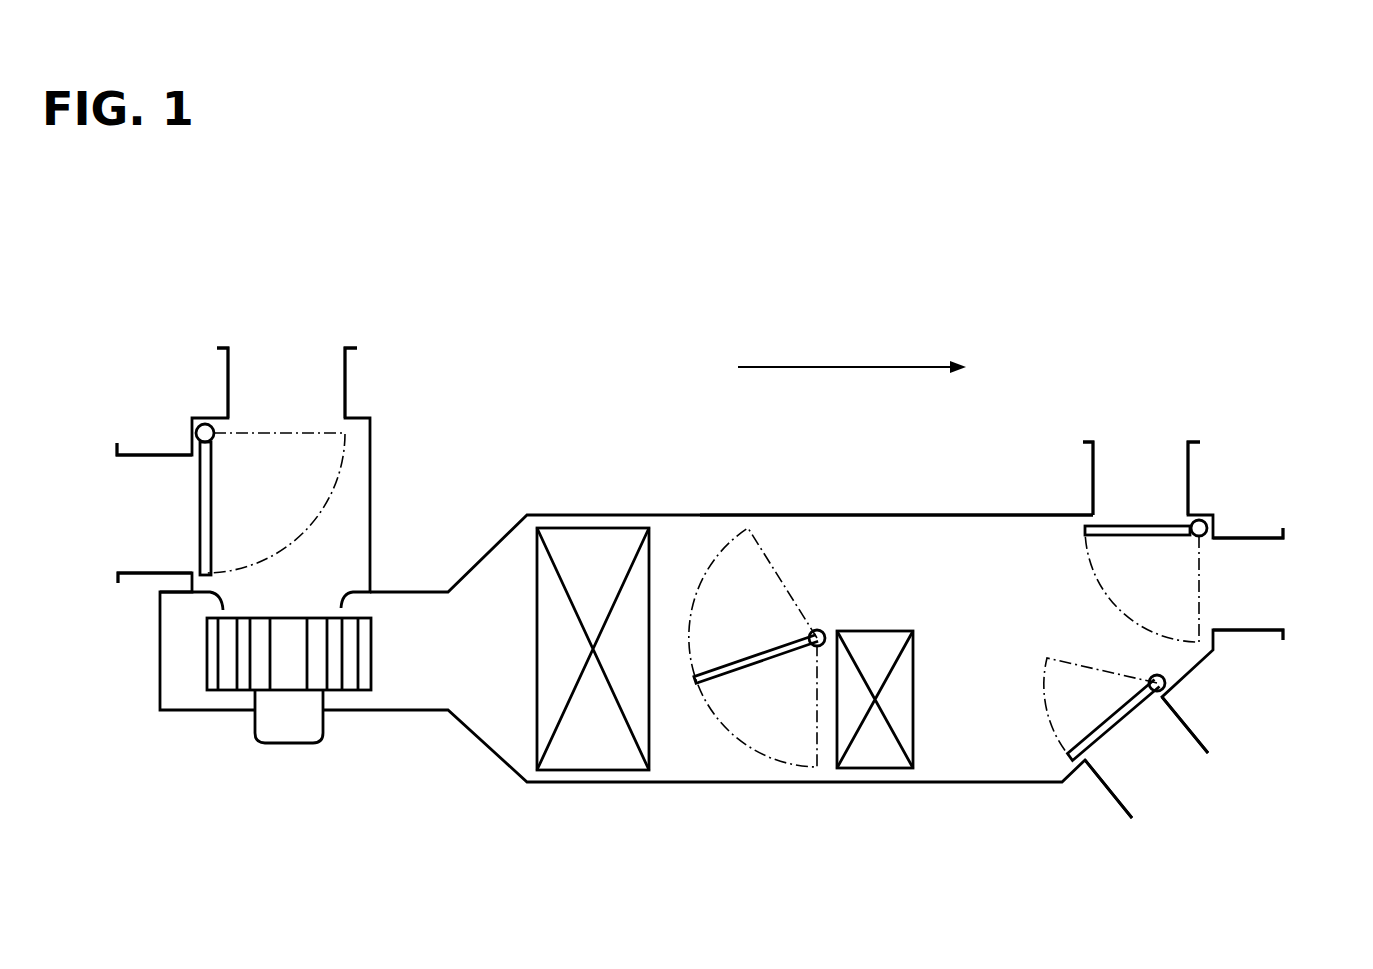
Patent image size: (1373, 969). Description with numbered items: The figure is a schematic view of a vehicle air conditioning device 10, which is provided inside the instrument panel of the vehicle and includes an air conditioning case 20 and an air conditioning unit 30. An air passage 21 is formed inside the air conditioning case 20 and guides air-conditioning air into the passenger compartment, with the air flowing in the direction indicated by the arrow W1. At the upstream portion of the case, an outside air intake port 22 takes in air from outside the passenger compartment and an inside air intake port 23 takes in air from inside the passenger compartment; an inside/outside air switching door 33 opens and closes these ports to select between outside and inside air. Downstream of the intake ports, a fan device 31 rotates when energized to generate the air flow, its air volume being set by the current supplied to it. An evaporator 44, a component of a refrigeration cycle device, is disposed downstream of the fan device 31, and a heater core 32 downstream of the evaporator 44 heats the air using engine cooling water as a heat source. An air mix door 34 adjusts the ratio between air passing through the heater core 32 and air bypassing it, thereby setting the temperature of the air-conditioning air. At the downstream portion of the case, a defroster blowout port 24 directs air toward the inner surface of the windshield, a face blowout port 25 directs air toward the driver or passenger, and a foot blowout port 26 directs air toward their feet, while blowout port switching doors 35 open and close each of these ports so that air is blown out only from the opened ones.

The vehicle air conditioning device 10 is at (1100, 292).
The air conditioning case 20 is at (799, 505).
The air passage 21 is at (900, 514).
The outside air intake port 22 is at (148, 455).
The inside air intake port 23 is at (345, 370).
The defroster blowout port 24 is at (1095, 465).
The face blowout port 25 is at (1260, 540).
The foot blowout port 26 is at (1178, 740).
The air conditioning unit 30 is at (507, 572).
The fan device 31 is at (288, 743).
The heater core 32 is at (873, 768).
The inside/outside air switching door 33 is at (198, 535).
The air mix door 34 is at (755, 667).
The blowout port switching doors 35 is at (1108, 717).
The evaporator 44 is at (593, 770).
The air flow direction W1 is at (852, 352).